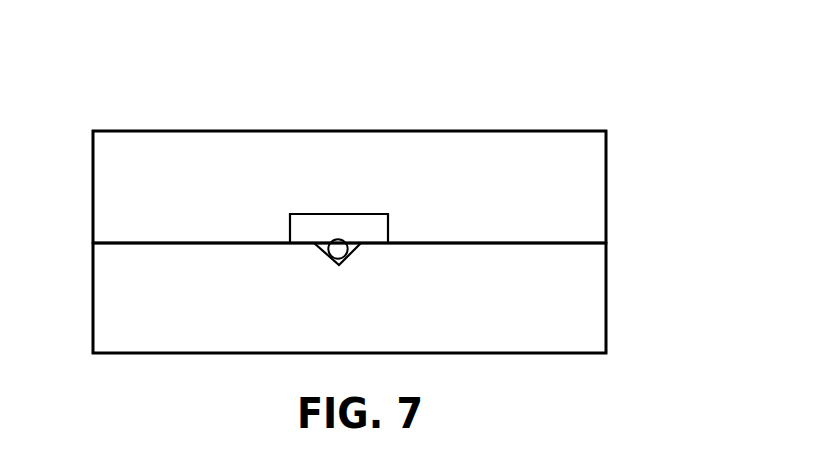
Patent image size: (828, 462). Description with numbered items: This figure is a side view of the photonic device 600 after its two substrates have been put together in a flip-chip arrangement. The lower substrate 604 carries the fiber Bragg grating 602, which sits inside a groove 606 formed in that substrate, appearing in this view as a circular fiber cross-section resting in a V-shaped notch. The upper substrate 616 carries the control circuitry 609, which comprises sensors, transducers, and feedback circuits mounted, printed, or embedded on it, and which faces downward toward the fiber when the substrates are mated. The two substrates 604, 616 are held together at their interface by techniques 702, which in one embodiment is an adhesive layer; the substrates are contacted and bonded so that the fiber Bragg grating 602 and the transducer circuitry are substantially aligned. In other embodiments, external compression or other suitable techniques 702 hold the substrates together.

The photonic device 600 is at (627, 22).
The substrate 616 is at (607, 183).
The substrate 604 is at (607, 303).
The techniques 702 is at (607, 240).
The control circuitry 609 is at (388, 222).
The fiber Bragg grating 602 is at (333, 252).
The groove 606 is at (358, 257).